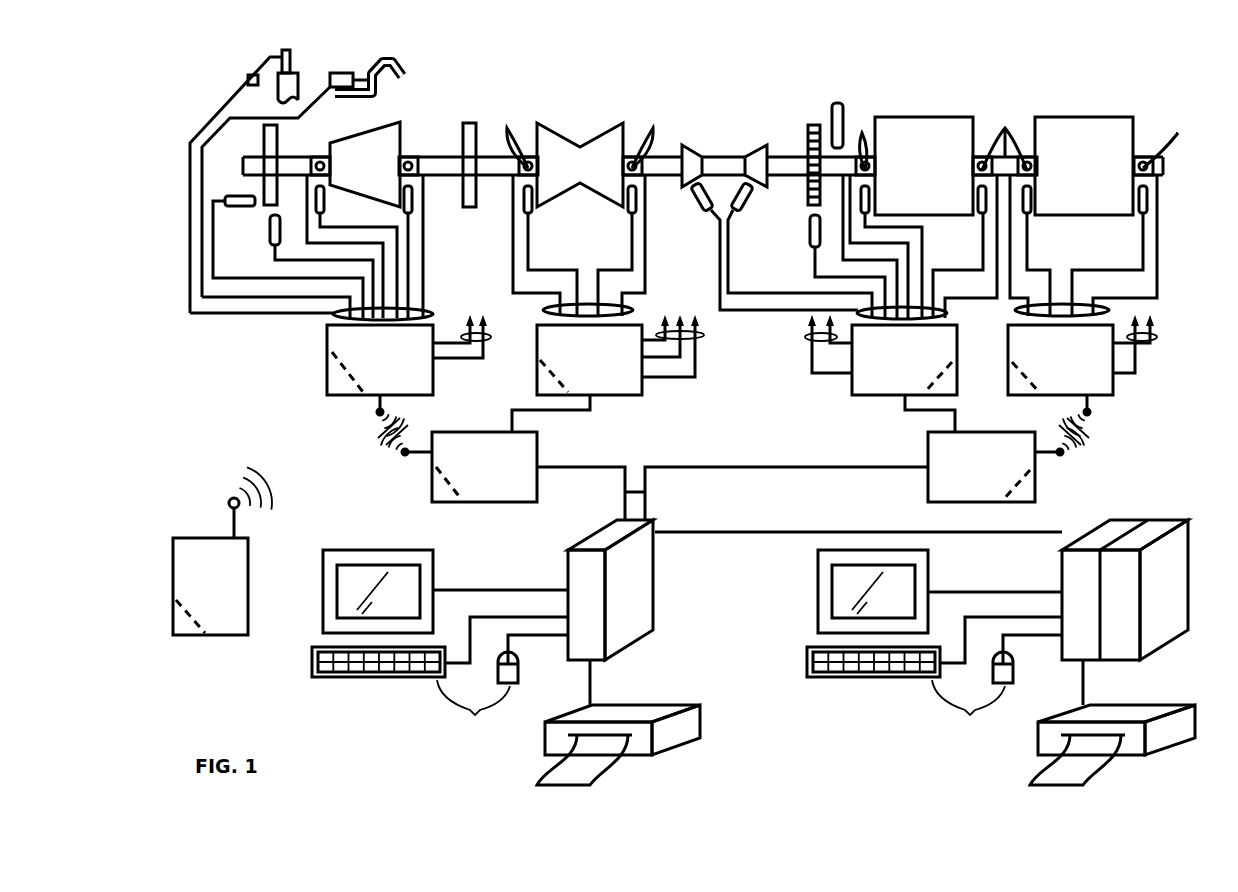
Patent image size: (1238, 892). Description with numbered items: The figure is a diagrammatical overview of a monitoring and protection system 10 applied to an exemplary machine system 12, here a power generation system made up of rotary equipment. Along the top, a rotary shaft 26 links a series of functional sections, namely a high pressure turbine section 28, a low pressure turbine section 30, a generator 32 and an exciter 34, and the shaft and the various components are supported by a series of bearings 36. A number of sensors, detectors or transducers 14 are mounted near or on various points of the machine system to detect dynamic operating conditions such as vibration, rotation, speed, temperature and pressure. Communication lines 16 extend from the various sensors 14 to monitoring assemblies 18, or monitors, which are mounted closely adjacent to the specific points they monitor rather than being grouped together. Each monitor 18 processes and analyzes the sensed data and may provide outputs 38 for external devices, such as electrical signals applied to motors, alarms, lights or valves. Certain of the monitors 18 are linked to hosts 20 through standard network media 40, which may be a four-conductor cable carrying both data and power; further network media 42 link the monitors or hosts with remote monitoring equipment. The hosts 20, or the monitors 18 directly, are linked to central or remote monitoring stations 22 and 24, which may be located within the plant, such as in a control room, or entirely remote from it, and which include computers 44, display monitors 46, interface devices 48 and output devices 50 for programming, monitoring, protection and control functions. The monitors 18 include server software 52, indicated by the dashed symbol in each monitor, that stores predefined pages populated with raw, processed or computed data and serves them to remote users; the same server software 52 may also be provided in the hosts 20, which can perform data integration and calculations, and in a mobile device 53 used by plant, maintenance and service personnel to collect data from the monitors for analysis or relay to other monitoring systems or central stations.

The monitoring and protection system 10 is at (232, 440).
The machine system 12 is at (1028, 92).
The sensors 14 is at (247, 79).
The communication lines 16 is at (420, 313).
The monitoring assemblies 18 is at (327, 342).
The hosts 20 is at (487, 503).
The monitoring station 22 is at (655, 658).
The monitoring station 24 is at (1174, 658).
The rotary shaft 26 is at (722, 155).
The high pressure turbine section 28 is at (366, 138).
The low pressure turbine section 30 is at (566, 128).
The generator 32 is at (922, 117).
The exciter 34 is at (1085, 117).
The bearings 36 is at (318, 158).
The outputs 38 is at (480, 340).
The network media 40 is at (392, 455).
The network media 42 is at (625, 491).
The computers 44 is at (655, 575).
The monitors 46 is at (323, 592).
The interface devices 48 is at (687, 677).
The output devices 50 is at (702, 740).
The server software 52 is at (340, 392).
The mobile device 53 is at (222, 620).